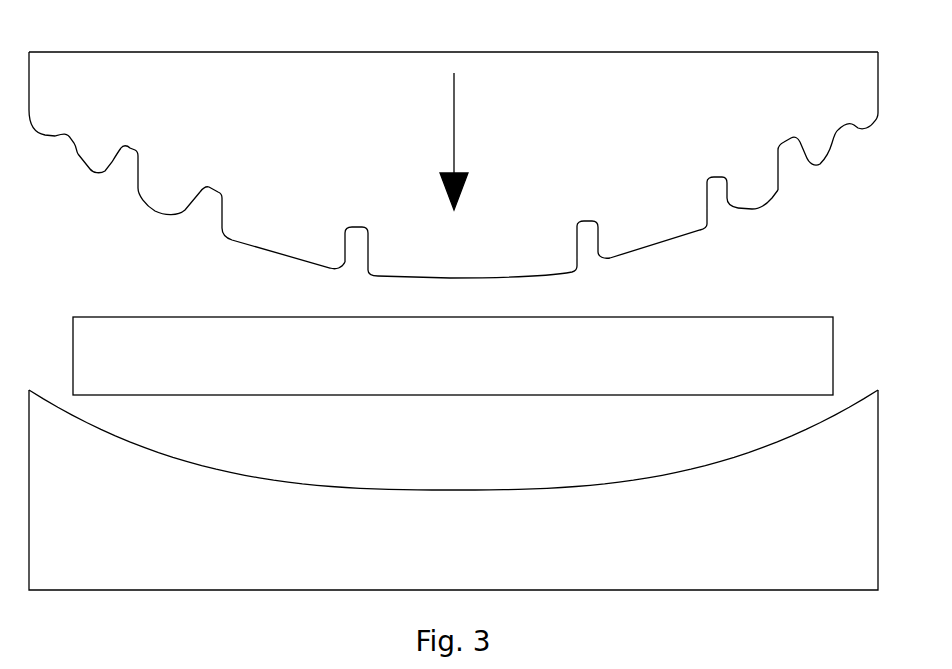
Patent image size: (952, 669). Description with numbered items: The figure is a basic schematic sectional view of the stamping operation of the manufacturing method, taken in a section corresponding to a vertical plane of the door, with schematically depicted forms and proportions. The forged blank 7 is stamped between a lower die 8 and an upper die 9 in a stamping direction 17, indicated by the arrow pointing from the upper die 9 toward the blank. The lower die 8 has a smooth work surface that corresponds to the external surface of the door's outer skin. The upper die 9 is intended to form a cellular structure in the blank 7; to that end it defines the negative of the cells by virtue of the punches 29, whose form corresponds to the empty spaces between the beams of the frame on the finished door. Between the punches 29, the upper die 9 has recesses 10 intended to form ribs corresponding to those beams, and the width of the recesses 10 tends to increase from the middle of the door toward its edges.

The forged blank 7 is at (635, 322).
The lower die 8 is at (165, 577).
The upper die 9 is at (480, 73).
The recesses 10 is at (129, 158).
The stamping direction 17 is at (451, 127).
The punches 29 is at (94, 160).